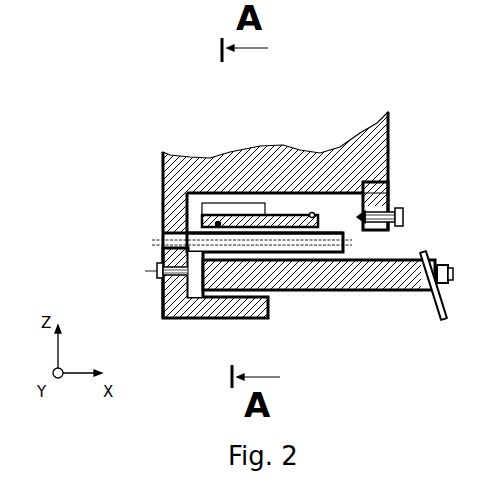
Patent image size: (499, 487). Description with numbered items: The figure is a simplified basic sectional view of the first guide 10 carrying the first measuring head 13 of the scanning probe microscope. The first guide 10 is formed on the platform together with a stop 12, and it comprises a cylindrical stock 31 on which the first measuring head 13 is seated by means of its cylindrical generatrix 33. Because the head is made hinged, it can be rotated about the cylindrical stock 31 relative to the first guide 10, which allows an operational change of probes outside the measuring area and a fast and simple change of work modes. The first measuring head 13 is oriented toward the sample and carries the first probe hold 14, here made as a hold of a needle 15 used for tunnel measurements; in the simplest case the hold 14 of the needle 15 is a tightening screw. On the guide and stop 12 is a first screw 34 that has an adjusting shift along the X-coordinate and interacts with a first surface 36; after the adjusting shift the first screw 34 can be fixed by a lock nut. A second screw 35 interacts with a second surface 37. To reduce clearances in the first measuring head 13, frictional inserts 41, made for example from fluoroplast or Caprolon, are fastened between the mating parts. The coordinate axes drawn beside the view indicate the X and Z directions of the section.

The first guide 10 is at (265, 172).
The stop 12 is at (393, 191).
The first measuring head 13 is at (266, 279).
The first probe hold 14 is at (452, 273).
The needle 15 is at (447, 309).
The cylindrical stock 31 is at (200, 302).
The cylindrical generatrix 33 is at (282, 213).
The first screw 34 is at (404, 212).
The second screw 35 is at (152, 274).
The first surface 36 is at (331, 218).
The second surface 37 is at (188, 284).
The frictional insert 41 is at (216, 222).